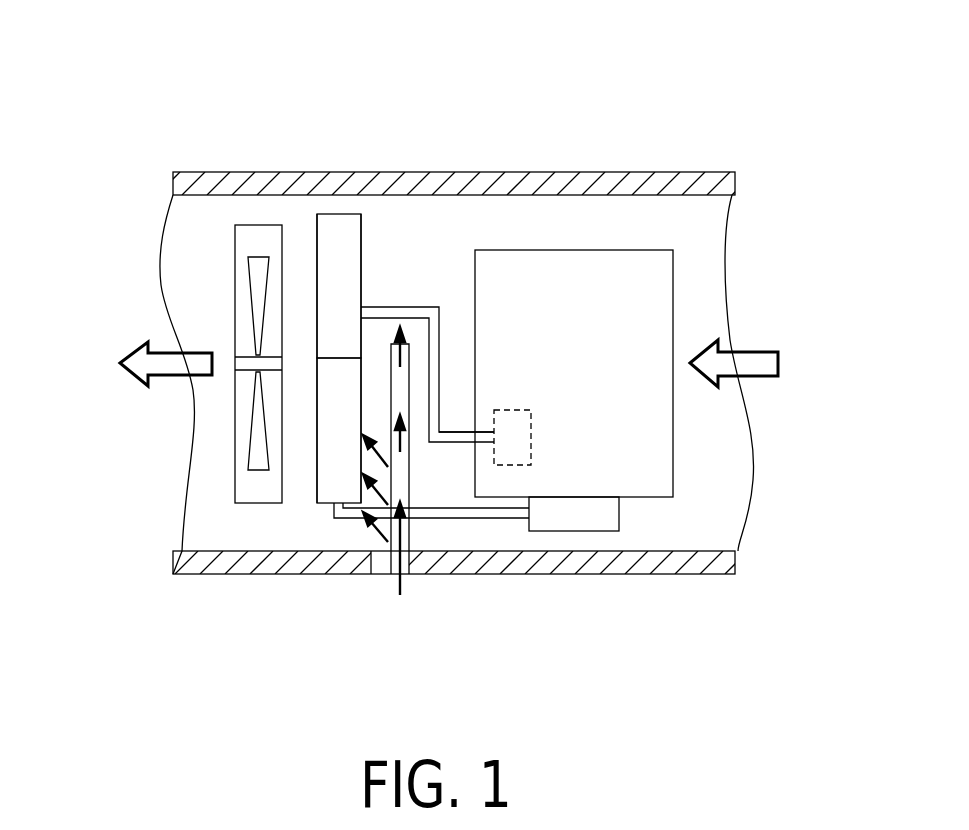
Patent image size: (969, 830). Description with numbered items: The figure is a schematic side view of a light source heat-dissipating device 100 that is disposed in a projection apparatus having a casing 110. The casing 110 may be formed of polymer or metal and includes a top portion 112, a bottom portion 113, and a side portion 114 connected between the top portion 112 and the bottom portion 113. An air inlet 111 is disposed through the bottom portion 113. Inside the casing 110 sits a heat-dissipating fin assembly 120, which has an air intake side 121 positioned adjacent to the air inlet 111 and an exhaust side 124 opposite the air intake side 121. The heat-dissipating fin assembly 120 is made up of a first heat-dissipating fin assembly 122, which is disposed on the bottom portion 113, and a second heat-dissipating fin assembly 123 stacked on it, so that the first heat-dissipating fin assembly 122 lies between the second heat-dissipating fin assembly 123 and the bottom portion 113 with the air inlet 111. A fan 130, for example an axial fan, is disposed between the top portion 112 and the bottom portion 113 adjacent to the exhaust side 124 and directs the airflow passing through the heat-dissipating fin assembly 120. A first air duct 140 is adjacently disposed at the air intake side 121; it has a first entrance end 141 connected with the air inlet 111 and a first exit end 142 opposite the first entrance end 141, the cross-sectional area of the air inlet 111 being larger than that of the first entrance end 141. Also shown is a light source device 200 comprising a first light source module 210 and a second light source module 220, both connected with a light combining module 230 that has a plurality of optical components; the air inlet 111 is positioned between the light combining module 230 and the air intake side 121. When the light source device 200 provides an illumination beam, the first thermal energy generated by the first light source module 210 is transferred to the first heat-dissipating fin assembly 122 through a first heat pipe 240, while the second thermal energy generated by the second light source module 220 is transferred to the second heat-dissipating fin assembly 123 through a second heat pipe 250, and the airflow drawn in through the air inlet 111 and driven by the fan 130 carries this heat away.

The light source heat-dissipating device 100 is at (148, 31).
The casing 110 is at (645, 166).
The air inlet 111 is at (373, 556).
The top portion 112 is at (557, 187).
The bottom portion 113 is at (280, 565).
The side portion 114 is at (208, 526).
The heat-dissipating fin assembly 120 is at (237, 87).
The air intake side 121 is at (361, 238).
The first heat-dissipating fin assembly 122 is at (330, 392).
The second heat-dissipating fin assembly 123 is at (342, 227).
The exhaust side 124 is at (317, 238).
The fan 130 is at (235, 247).
The first air duct 140 is at (424, 536).
The first entrance end 141 is at (393, 580).
The first exit end 142 is at (408, 343).
The light source device 200 is at (427, 661).
The first light source module 210 is at (573, 512).
The second light source module 220 is at (512, 453).
The light combining module 230 is at (643, 477).
The first heat pipe 240 is at (473, 513).
The second heat pipe 250 is at (445, 437).